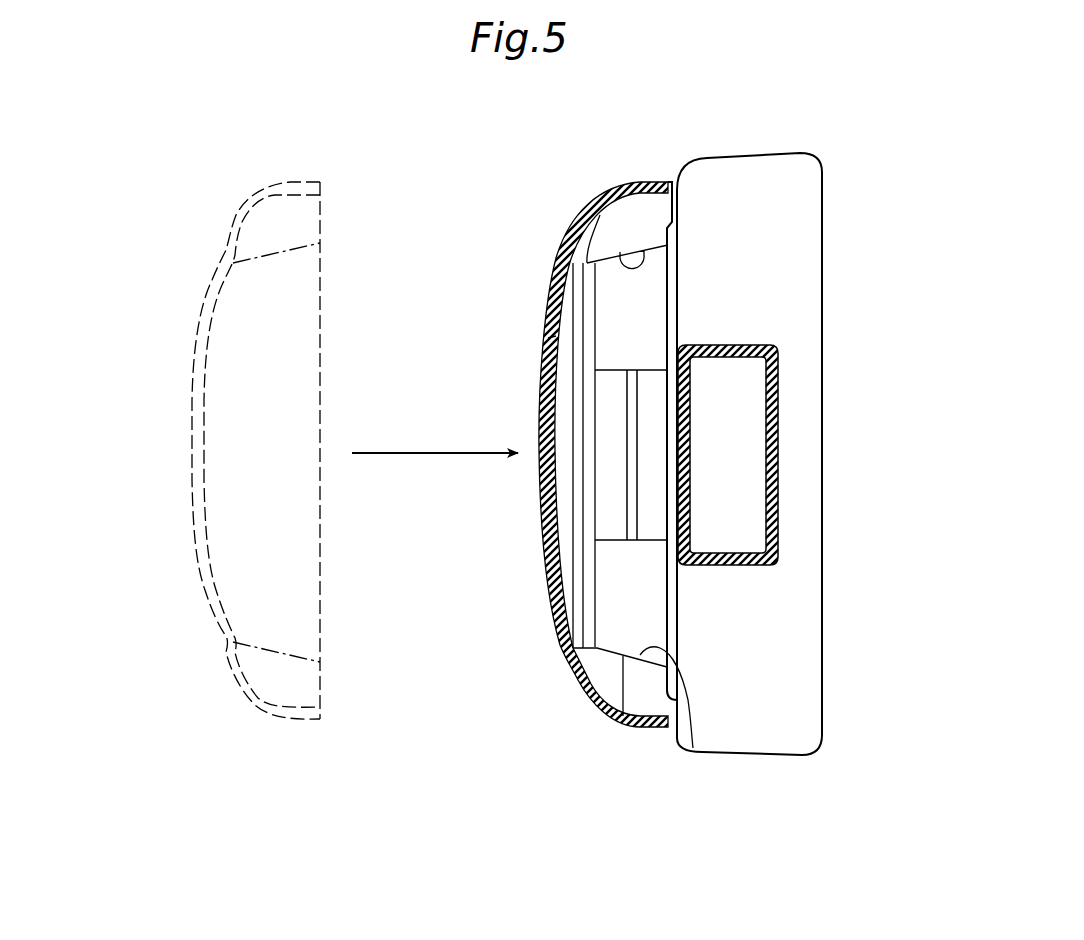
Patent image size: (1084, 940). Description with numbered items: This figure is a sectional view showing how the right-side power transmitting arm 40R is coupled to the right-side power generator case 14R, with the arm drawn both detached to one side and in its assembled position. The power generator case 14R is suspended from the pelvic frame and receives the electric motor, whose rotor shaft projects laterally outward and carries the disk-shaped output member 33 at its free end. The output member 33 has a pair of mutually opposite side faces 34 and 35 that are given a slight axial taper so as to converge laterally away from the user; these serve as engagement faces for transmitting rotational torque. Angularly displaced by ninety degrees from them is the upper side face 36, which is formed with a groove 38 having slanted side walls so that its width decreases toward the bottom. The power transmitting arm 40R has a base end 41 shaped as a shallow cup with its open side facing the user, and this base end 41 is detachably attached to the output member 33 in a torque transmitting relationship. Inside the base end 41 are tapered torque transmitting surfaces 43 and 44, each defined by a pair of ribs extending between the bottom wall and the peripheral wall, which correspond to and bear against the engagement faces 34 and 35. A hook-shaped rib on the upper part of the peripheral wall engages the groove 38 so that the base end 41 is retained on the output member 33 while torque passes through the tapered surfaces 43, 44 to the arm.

The power transmitting arm 40R is at (239, 180).
The power generator case 14R is at (814, 255).
The output member 33 is at (607, 598).
The side face 34 is at (605, 262).
The side face 35 is at (624, 664).
The side face 36 is at (605, 508).
The groove 38 is at (652, 460).
The base end 41 is at (550, 338).
The tapered torque transmitting surface 43 is at (636, 262).
The tapered torque transmitting surface 44 is at (693, 748).